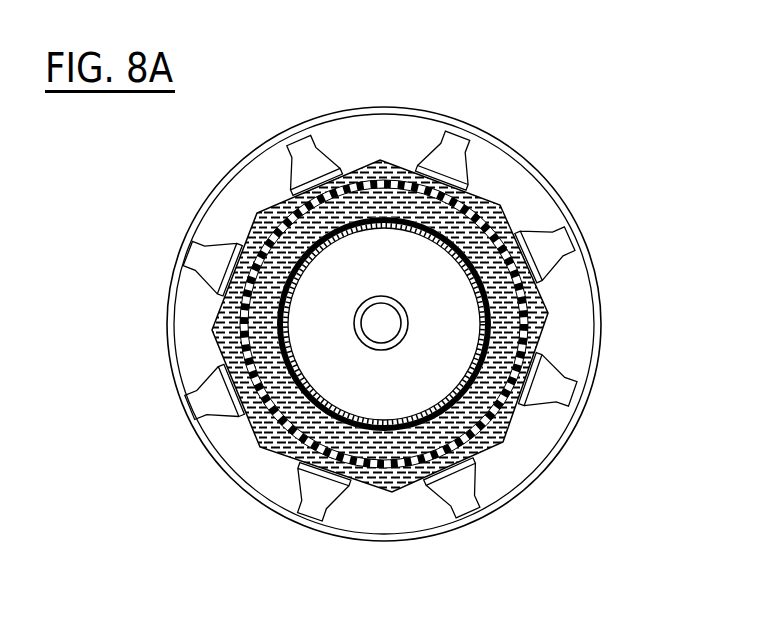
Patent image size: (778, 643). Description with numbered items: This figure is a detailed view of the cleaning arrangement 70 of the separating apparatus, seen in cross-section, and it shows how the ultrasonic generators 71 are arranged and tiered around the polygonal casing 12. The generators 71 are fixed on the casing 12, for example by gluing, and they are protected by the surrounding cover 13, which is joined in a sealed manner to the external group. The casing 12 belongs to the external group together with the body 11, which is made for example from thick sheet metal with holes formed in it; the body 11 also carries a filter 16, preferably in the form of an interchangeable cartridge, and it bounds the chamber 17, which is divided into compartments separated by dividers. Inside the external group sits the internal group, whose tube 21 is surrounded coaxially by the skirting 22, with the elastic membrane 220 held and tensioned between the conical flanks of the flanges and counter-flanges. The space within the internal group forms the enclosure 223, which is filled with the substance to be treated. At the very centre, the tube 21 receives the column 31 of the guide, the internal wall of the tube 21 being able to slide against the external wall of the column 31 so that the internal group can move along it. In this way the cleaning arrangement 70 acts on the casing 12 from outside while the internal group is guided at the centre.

The cleaning arrangement 70 is at (537, 158).
The cover 13 is at (568, 208).
The chamber 17 is at (253, 225).
The casing 12 is at (547, 310).
The body 11 is at (537, 337).
The filter 16 is at (530, 357).
The ultrasonic generators 71 is at (550, 266).
The skirting 22 is at (305, 383).
The elastic membrane 220 is at (308, 259).
The enclosure 223 is at (285, 320).
The tube 21 is at (406, 315).
The column 31 is at (391, 333).